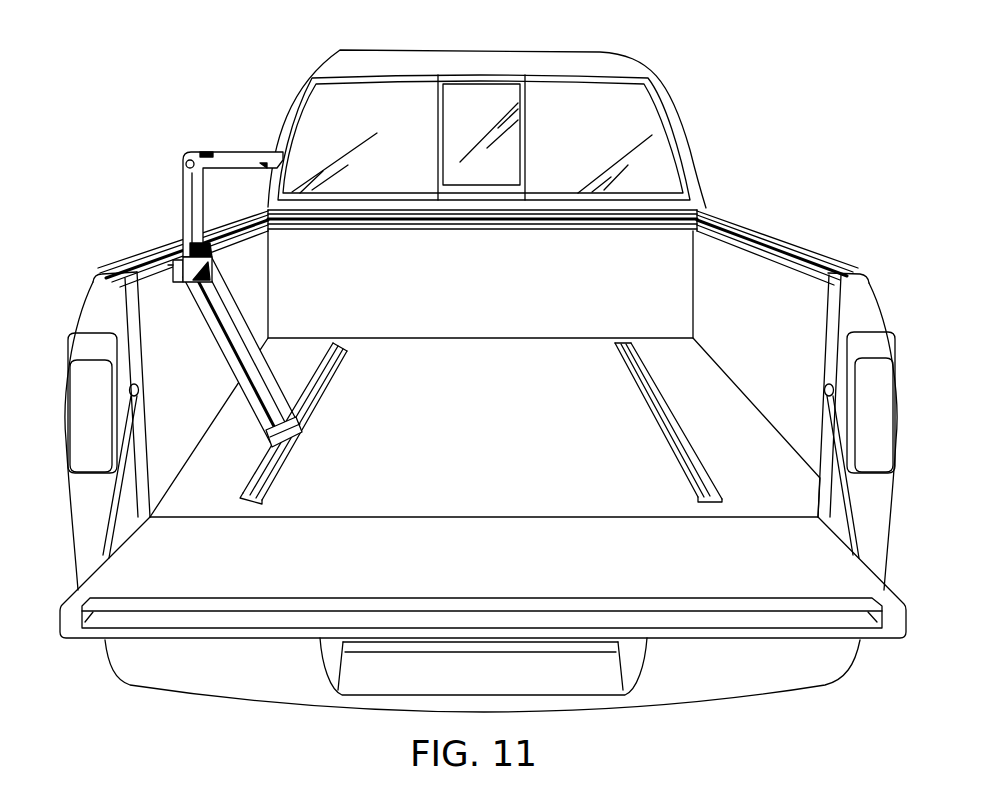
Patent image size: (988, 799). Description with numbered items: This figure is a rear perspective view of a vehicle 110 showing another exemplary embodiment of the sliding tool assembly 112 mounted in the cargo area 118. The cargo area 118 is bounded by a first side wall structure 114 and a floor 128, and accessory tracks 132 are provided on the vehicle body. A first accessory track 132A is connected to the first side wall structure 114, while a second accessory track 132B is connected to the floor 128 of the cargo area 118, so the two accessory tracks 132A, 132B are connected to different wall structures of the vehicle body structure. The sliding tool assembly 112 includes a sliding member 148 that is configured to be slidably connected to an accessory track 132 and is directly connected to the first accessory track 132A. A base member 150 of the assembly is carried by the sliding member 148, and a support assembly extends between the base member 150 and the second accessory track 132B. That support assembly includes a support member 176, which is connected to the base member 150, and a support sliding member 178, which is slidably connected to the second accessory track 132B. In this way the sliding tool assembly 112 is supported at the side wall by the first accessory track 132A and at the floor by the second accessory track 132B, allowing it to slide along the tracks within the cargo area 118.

The vehicle 110 is at (603, 48).
The sliding tool assembly 112 is at (175, 193).
The first side wall structure 114 is at (143, 257).
The cargo area 118 is at (568, 460).
The floor 128 is at (388, 468).
The accessory track 132 is at (512, 234).
The first accessory track 132A is at (245, 254).
The second accessory track 132B is at (342, 384).
The sliding member 148 is at (168, 295).
The base member 150 is at (189, 272).
The support member 176 is at (250, 395).
The support sliding member 178 is at (288, 446).